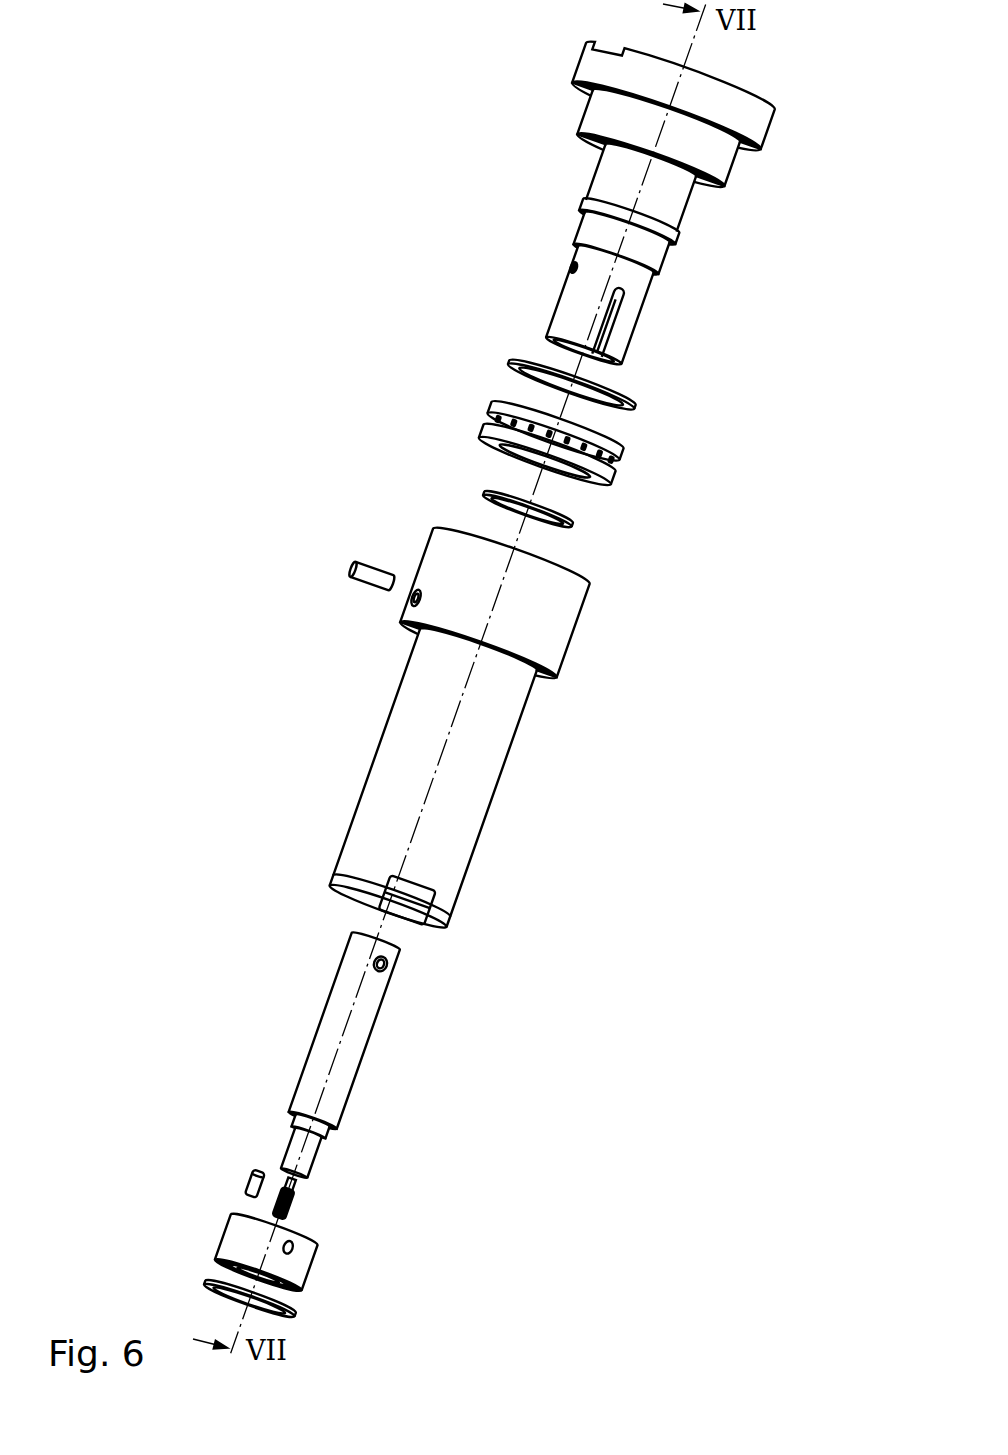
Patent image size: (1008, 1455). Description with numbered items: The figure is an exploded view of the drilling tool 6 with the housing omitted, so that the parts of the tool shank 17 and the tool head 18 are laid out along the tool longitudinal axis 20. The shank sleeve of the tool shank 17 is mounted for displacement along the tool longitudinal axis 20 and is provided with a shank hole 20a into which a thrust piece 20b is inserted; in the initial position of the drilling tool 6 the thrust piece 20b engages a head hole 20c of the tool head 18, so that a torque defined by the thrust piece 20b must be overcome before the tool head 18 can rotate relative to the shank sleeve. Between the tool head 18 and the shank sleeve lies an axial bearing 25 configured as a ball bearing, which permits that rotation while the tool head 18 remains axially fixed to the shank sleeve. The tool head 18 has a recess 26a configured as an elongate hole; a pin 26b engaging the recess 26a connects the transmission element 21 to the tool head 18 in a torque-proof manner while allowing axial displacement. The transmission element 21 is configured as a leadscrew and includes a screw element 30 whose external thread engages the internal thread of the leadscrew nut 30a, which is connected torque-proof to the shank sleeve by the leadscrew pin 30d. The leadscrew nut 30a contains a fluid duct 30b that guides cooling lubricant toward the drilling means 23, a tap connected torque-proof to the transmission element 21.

The drilling tool 6 is at (512, 214).
The tool shank 17 is at (510, 783).
The tool head 18 is at (755, 118).
The tool longitudinal axis 20 is at (527, 384).
The shank hole 20a is at (410, 598).
The thrust piece 20b is at (355, 570).
The head hole 20c is at (572, 268).
The transmission element 21 is at (376, 1059).
The drilling means 23 is at (292, 1205).
The axial bearing 25 is at (616, 450).
The recess 26a is at (620, 317).
The pin 26b is at (390, 962).
The screw element 30 is at (271, 1188).
The leadscrew nut 30a is at (210, 1227).
The fluid duct 30b is at (303, 1283).
The leadscrew pin 30d is at (250, 1182).